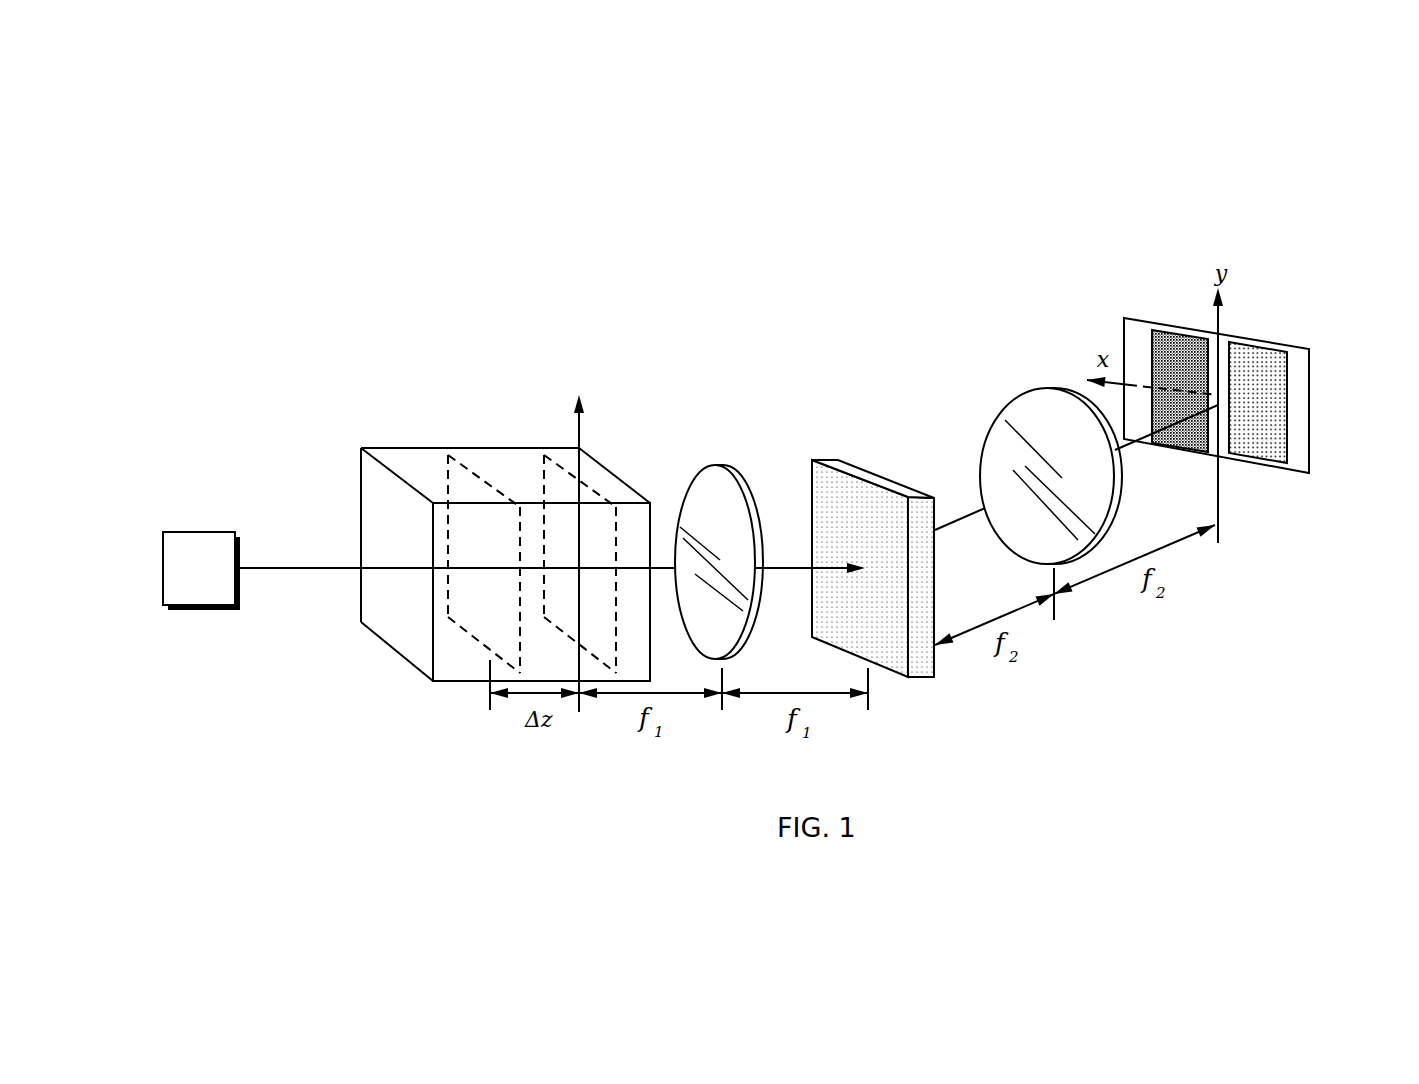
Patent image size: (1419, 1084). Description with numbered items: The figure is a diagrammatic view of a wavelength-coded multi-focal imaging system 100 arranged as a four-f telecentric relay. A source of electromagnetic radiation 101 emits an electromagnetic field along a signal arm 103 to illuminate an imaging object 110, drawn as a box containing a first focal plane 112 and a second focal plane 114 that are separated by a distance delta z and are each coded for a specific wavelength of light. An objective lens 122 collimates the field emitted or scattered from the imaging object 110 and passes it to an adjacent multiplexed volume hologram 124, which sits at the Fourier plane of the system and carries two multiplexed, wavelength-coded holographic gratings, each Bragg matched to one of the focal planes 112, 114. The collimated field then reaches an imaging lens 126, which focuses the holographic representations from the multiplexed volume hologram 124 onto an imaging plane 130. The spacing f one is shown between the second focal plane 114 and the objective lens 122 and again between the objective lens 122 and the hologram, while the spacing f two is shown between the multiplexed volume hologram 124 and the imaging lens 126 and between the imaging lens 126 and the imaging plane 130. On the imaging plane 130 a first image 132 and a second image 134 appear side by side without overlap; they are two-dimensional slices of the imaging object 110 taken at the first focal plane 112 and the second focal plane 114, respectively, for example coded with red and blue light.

The wavelength-coded multi-focal imaging system 100 is at (818, 277).
The source of electromagnetic radiation 101 is at (218, 581).
The signal arm 103 is at (317, 568).
The imaging object 110 is at (383, 447).
The first focal plane 112 is at (463, 627).
The second focal plane 114 is at (590, 493).
The objective lens 122 is at (747, 637).
The multiplexed volume hologram 124 is at (918, 668).
The imaging lens 126 is at (1122, 487).
The imaging plane 130 is at (1310, 448).
The first image 132 is at (1148, 342).
The second image 134 is at (1290, 390).